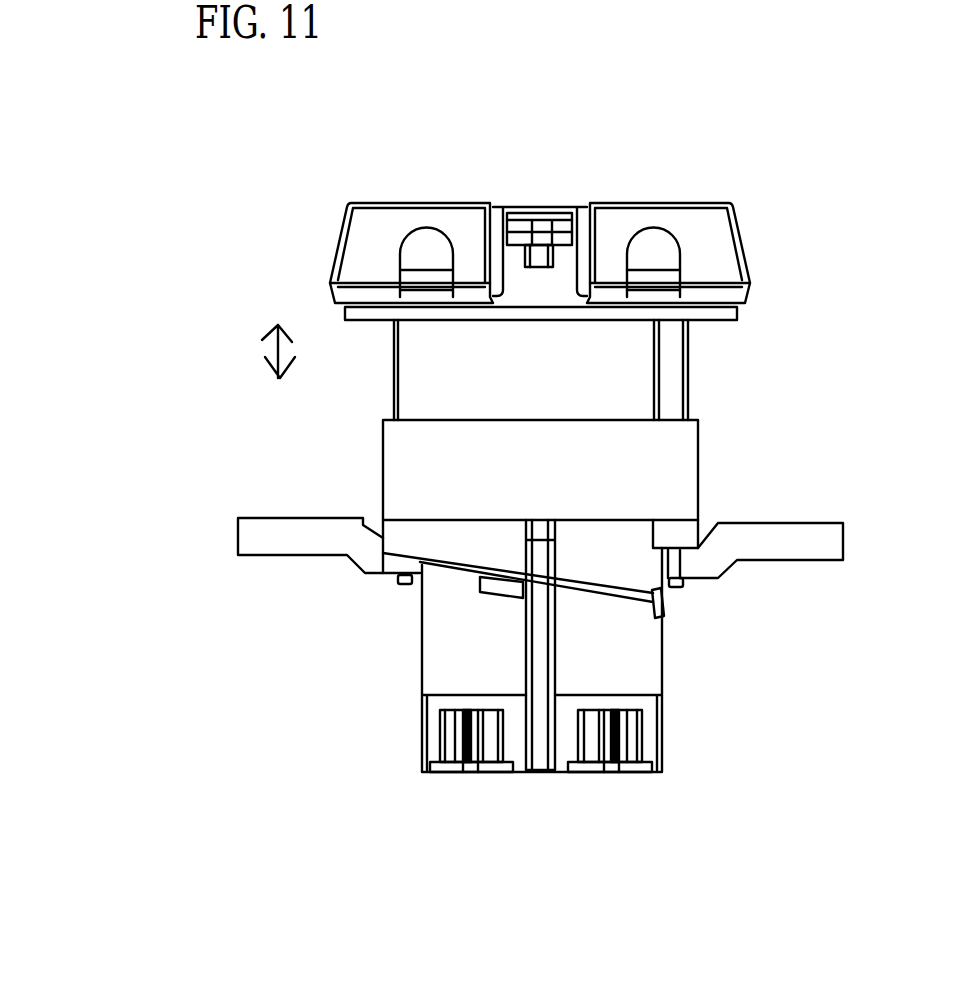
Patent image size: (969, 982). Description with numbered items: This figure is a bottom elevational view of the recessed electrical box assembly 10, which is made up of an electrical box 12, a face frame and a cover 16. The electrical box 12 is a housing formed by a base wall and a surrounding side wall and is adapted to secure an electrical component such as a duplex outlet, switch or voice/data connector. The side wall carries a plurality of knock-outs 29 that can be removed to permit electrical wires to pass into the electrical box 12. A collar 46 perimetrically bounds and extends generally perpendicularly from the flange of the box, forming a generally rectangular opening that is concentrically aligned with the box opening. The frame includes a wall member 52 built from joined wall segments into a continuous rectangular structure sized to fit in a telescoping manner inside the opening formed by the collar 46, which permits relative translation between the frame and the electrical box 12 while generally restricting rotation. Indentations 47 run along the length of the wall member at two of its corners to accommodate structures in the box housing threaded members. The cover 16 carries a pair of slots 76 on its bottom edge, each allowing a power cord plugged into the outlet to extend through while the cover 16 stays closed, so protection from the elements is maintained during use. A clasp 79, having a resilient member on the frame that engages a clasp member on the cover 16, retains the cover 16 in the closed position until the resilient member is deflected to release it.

The recessed electrical box assembly 10 is at (155, 352).
The electrical box 12 is at (420, 655).
The cover 16 is at (388, 203).
The knock-outs 29 is at (447, 737).
The collar 46 is at (383, 467).
The indentations 47 is at (667, 390).
The wall member 52 is at (640, 352).
The slots 76 is at (653, 247).
The clasp 79 is at (542, 230).